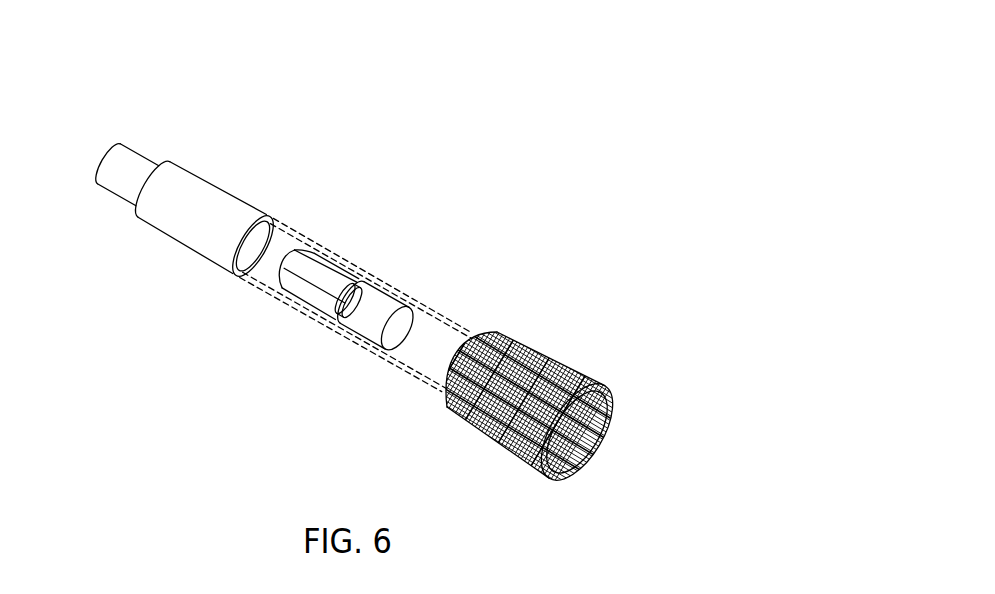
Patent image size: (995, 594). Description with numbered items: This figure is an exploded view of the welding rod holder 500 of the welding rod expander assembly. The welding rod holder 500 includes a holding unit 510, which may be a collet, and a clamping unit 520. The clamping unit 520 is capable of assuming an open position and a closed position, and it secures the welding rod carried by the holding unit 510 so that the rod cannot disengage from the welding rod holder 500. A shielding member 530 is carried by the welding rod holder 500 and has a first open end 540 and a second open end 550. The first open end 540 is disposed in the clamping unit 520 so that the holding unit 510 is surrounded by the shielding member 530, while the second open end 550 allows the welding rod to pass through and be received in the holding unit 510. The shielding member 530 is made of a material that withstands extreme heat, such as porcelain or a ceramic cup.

The welding rod holder 500 is at (676, 75).
The holding unit 510 is at (339, 264).
The clamping unit 520 is at (548, 355).
The shielding member 530 is at (233, 195).
The first open end 540 is at (228, 274).
The second open end 550 is at (98, 170).